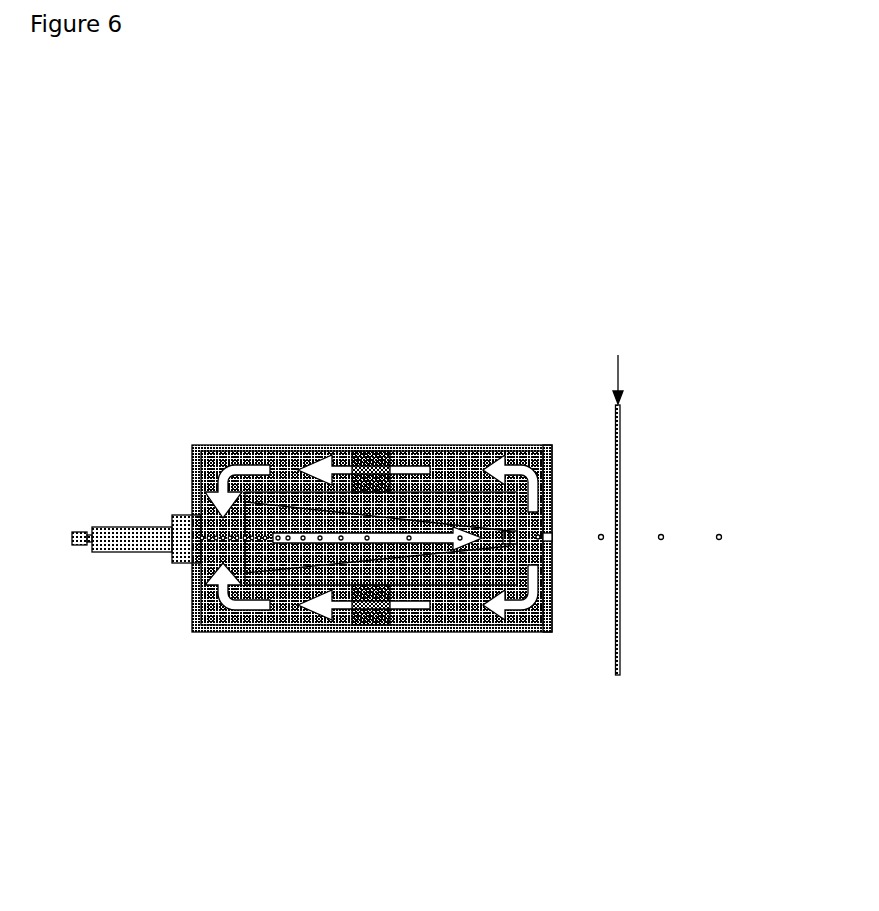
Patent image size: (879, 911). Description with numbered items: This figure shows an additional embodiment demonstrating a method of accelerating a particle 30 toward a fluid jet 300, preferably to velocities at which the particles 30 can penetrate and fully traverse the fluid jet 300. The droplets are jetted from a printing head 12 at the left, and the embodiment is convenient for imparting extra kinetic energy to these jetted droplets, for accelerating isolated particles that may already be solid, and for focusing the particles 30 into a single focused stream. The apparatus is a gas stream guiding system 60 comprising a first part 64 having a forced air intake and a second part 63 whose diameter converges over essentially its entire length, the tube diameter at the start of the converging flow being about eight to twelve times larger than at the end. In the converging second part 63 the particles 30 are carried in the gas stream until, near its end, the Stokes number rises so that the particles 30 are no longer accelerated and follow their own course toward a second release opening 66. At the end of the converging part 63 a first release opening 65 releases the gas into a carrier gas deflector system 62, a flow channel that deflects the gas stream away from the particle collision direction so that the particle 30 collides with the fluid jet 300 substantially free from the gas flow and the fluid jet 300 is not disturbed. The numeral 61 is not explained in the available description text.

The gas stream guiding system 60 is at (413, 716).
The heater 61 is at (372, 462).
The carrier gas deflector system 62 is at (550, 495).
The second part 63 is at (317, 576).
The first part 64 is at (222, 515).
The first release opening 65 is at (514, 546).
The second release opening 66 is at (554, 543).
The printing head 12 is at (138, 545).
The particle 30 is at (663, 536).
The fluid jet 300 is at (621, 645).